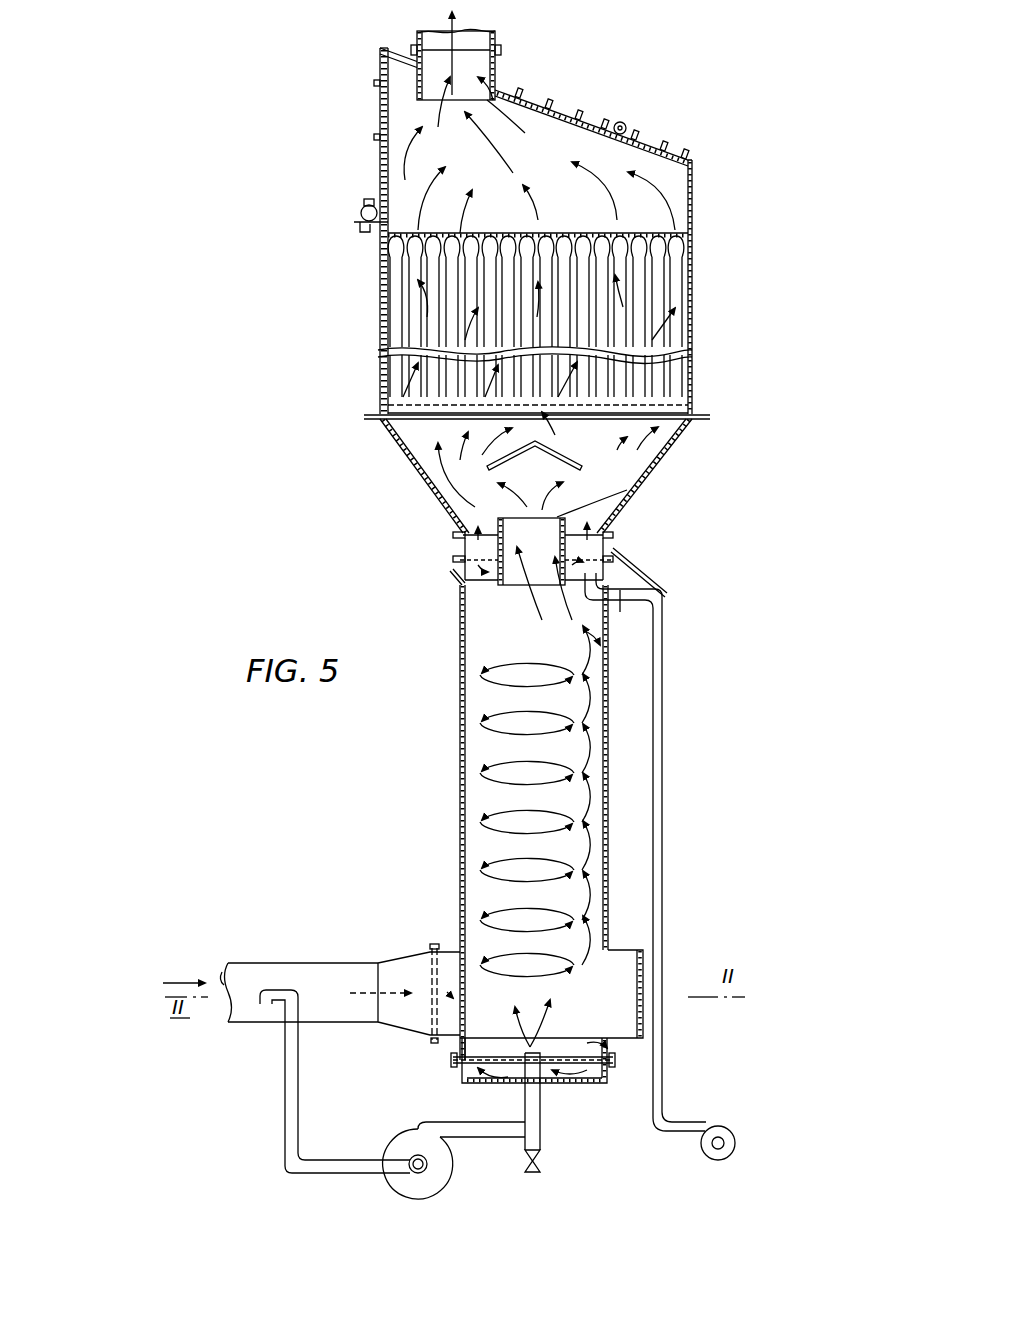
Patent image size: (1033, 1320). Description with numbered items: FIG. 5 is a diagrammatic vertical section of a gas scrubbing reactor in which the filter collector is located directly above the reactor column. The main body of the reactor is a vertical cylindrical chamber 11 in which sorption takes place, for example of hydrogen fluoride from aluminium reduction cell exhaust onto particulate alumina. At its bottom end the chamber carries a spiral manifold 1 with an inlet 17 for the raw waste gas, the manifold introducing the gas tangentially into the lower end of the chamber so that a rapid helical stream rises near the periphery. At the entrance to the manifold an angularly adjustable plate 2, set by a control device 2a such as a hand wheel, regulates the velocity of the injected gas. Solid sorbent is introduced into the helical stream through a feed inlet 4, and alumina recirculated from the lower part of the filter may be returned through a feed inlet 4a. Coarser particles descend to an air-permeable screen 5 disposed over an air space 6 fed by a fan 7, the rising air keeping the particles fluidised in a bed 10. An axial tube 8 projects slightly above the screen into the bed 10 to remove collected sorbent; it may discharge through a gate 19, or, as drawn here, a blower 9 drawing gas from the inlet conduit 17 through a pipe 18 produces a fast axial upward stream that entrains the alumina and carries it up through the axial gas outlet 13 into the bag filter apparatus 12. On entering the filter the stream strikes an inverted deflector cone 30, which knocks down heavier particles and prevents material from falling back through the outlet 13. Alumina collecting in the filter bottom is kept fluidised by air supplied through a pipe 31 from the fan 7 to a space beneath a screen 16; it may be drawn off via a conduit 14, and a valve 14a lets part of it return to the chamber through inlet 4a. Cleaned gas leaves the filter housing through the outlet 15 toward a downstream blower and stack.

The spiral manifold 1 is at (630, 950).
The angularly adjustable plate 2 is at (415, 951).
The control device 2a is at (437, 947).
The feed inlet 4 is at (452, 575).
The feed inlet 4a is at (617, 602).
The air-permeable screen 5 is at (608, 1060).
The air space 6 is at (580, 1084).
The fan 7 is at (736, 1139).
The axial tube 8 is at (525, 1072).
The blower 9 is at (400, 1136).
The fluidised bed 10 is at (462, 1044).
The vertical cylindrical chamber 11 is at (460, 690).
The bag filter apparatus 12 is at (692, 277).
The axial gas outlet 13 is at (565, 523).
The conduit 14 is at (615, 548).
The valve 14a is at (615, 578).
The outlet 15 is at (498, 48).
The screen 16 is at (455, 556).
The inlet 17 is at (241, 963).
The pipe 18 is at (280, 988).
The gate 19 is at (524, 1166).
The inverted deflector cone 30 is at (556, 447).
The pipe 31 is at (662, 728).